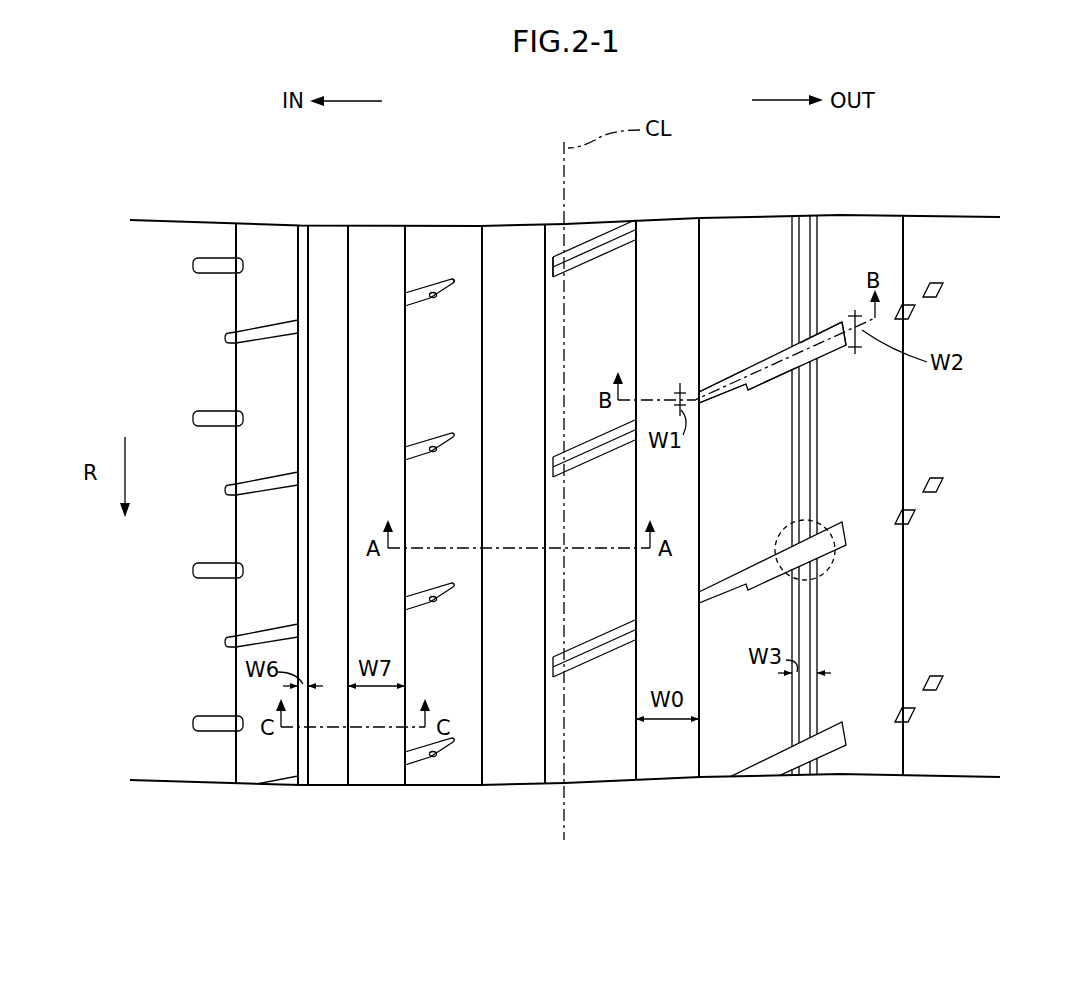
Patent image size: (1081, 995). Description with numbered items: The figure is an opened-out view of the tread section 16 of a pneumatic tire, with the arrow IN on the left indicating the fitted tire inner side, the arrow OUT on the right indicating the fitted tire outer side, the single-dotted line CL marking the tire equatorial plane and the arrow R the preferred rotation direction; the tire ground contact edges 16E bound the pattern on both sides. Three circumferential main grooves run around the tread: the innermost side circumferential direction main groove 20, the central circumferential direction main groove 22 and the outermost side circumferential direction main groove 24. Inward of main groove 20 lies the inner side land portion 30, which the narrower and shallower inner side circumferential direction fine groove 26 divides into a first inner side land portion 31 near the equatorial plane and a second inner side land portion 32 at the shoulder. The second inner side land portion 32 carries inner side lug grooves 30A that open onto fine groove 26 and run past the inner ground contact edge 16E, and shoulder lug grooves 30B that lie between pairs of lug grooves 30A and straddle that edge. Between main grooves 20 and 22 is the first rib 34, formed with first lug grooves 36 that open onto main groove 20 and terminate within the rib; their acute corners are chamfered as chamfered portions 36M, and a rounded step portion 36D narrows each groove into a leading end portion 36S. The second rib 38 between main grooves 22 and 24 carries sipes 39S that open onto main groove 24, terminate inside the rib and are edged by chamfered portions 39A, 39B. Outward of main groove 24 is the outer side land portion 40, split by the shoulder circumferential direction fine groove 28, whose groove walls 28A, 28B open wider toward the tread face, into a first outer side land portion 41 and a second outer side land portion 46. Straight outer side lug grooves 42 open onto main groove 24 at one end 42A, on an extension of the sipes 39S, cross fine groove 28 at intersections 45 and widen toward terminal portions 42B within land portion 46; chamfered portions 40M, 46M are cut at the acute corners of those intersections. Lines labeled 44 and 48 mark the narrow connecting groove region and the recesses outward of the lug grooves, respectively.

The tread section 16 is at (1027, 165).
The tire ground contact edges 16E is at (235, 233).
The innermost side circumferential direction main groove 20 is at (375, 230).
The central circumferential direction main groove 22 is at (510, 230).
The outermost side circumferential direction main groove 24 is at (667, 222).
The inner side circumferential direction fine groove 26 is at (303, 226).
The shoulder circumferential direction fine groove 28 is at (811, 453).
The groove wall 28A is at (797, 217).
The groove wall 28B is at (815, 217).
The inner side land portion 30 is at (265, 551).
The inner side lug grooves 30A is at (270, 322).
The shoulder lug grooves 30B is at (212, 410).
The first inner side land portion 31 is at (328, 529).
The second inner side land portion 32 is at (240, 545).
The first rib 34 is at (416, 529).
The first lug grooves 36 is at (413, 502).
The chamfered portions 36M is at (408, 290).
The leading end portion 36S is at (451, 284).
The rounded step portion 36D is at (433, 300).
The second rib 38 is at (598, 784).
The chamfered portion 39A is at (613, 242).
The chamfered portion 39B is at (620, 250).
The sipes 39S is at (608, 265).
The outer side land portion 40 is at (839, 546).
The chamfered portion 40M is at (790, 370).
The first outer side land portion 41 is at (722, 777).
The outer side lug grooves 42 is at (789, 527).
The one end 42A is at (702, 404).
The terminal portion 42B is at (845, 348).
The sipe connecting lug groove 44 is at (722, 385).
The intersections 45 is at (776, 548).
The second outer side land portion 46 is at (910, 524).
The chamfered portion 46M is at (820, 325).
The shoulder sipe 48 is at (916, 312).